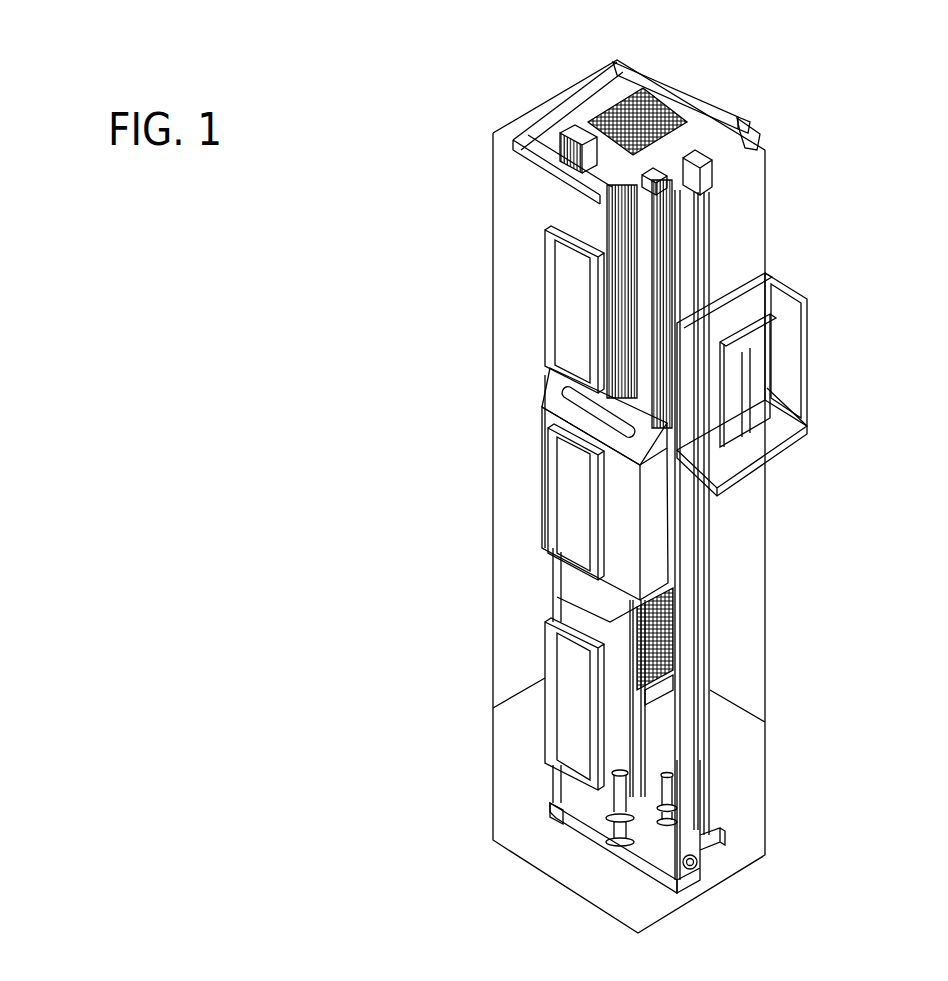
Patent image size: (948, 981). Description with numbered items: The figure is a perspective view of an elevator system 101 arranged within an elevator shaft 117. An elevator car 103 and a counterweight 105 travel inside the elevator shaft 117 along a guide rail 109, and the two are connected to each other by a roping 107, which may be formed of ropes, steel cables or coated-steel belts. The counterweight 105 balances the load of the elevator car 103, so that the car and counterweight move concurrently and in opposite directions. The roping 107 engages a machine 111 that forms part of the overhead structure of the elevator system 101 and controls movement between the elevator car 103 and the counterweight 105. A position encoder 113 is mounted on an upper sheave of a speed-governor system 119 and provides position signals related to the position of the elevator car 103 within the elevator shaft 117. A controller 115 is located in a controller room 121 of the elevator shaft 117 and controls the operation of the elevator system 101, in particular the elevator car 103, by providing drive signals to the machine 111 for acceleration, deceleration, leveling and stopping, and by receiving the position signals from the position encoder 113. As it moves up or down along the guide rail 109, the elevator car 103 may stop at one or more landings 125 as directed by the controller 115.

The elevator system 101 is at (797, 84).
The elevator car 103 is at (626, 526).
The counterweight 105 is at (670, 662).
The roping 107 is at (635, 307).
The guide rail 109 is at (694, 605).
The machine 111 is at (582, 133).
The position encoder 113 is at (698, 192).
The controller 115 is at (767, 390).
The elevator shaft 117 is at (546, 612).
The speed-governor system 119 is at (699, 222).
The controller room 121 is at (811, 299).
The landings 125 is at (545, 296).